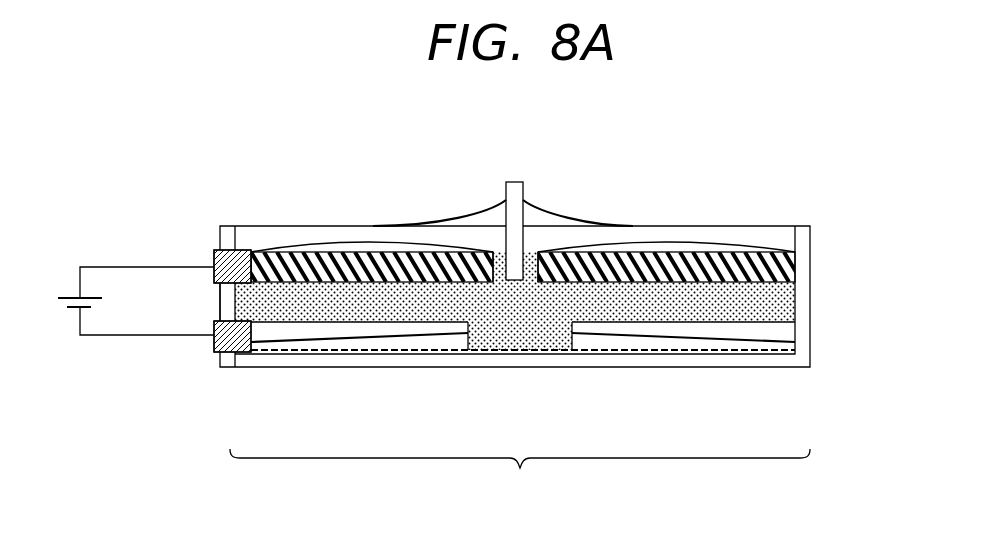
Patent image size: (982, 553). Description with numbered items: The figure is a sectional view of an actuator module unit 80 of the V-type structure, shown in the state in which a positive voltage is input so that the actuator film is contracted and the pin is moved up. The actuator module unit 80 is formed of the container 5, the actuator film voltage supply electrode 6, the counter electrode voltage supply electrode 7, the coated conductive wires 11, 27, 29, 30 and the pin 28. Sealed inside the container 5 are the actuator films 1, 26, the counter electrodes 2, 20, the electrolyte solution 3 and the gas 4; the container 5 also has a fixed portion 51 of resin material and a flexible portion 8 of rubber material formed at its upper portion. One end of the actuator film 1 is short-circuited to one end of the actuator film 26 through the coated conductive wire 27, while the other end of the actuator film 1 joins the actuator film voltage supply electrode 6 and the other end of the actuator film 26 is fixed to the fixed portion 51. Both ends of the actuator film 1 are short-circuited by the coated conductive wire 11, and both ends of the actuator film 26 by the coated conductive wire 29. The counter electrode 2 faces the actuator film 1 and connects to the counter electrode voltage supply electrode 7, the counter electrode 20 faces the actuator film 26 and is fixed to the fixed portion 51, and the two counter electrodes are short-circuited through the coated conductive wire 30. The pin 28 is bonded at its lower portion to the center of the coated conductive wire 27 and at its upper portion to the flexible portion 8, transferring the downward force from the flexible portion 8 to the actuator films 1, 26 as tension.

The actuator film 1 is at (292, 270).
The counter electrode 2 is at (337, 345).
The electrolyte solution 3 is at (783, 294).
The gas 4 is at (783, 237).
The container 5 is at (520, 473).
The actuator film voltage supply electrode 6 is at (214, 253).
The counter electrode voltage supply electrode 7 is at (214, 346).
The flexible portion 8 is at (552, 210).
The coated conductive wire 11 is at (349, 242).
The counter electrode 20 is at (652, 345).
The actuator film 26 is at (736, 262).
The coated conductive wire 27 is at (500, 250).
The pin 28 is at (517, 182).
The coated conductive wire 29 is at (680, 242).
The coated conductive wire 30 is at (518, 347).
The fixed portion 51 is at (801, 353).
The actuator module unit 80 is at (728, 535).